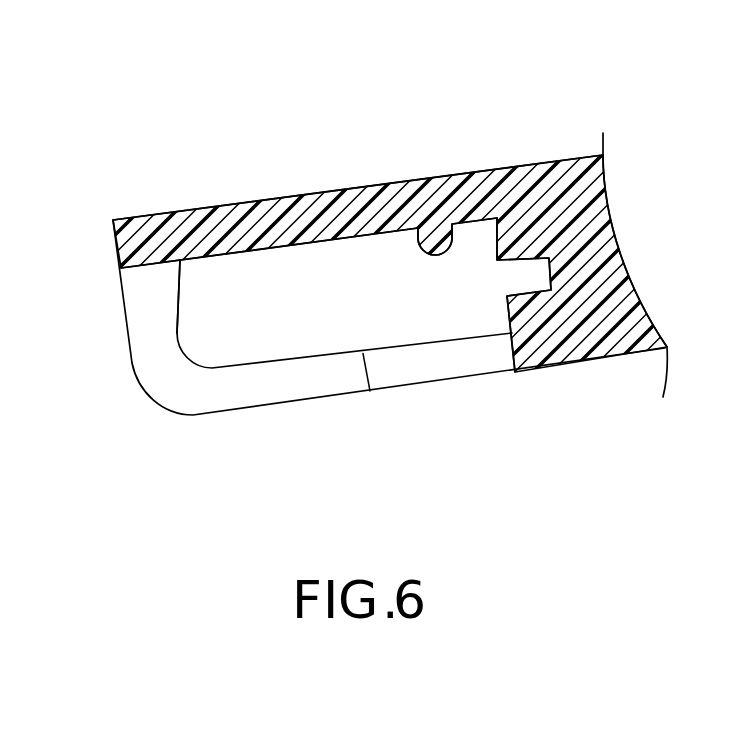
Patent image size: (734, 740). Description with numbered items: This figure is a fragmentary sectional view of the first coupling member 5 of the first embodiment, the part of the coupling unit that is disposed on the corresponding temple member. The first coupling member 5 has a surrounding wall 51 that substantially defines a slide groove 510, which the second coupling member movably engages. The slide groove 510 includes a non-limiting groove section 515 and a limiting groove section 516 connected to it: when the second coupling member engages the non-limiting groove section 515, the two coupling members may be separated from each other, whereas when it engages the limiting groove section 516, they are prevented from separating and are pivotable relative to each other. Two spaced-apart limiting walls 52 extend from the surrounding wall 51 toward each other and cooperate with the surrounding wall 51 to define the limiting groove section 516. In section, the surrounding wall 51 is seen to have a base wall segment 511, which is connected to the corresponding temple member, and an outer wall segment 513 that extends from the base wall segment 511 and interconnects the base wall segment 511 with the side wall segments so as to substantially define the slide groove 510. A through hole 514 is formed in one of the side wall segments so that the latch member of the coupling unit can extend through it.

The first coupling member 5 is at (367, 259).
The surrounding wall 51 is at (367, 288).
The limiting walls 52 is at (363, 337).
The slide groove 510 is at (388, 255).
The base wall segment 511 is at (560, 343).
The outer wall segment 513 is at (315, 194).
The through hole 514 is at (507, 298).
The non-limiting groove section 515 is at (419, 321).
The limiting groove section 516 is at (205, 321).